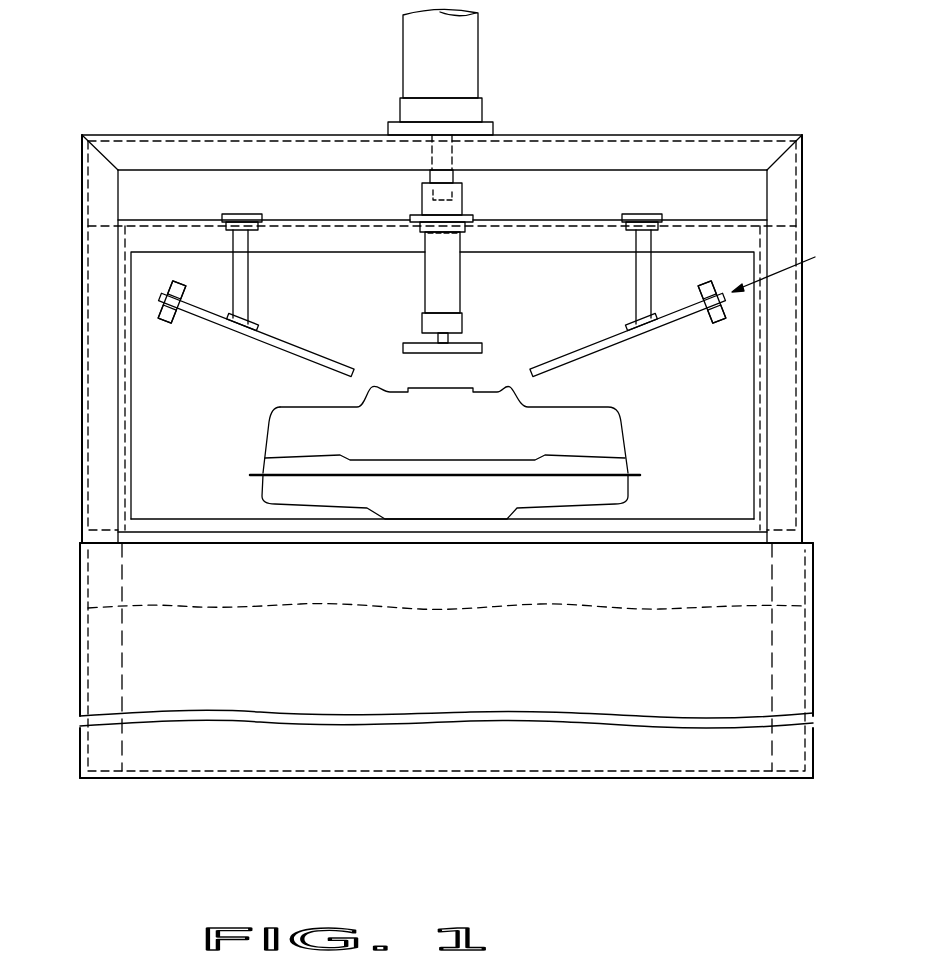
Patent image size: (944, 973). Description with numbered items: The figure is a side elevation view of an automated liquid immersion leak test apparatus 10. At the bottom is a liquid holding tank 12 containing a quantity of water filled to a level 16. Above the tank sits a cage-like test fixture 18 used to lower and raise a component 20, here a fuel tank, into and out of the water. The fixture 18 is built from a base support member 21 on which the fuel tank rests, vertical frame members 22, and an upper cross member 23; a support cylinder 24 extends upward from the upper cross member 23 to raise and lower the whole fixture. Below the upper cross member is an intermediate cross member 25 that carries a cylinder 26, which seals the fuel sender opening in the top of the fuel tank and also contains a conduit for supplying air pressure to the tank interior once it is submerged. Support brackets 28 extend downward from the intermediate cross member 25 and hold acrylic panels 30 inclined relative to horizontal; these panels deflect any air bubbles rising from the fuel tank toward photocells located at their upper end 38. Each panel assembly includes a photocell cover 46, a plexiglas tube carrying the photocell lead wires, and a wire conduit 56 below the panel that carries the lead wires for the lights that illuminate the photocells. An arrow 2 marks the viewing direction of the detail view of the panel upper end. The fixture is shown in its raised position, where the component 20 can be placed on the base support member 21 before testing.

The automated liquid immersion leak test apparatus 10 is at (436, 393).
The liquid holding tank 12 is at (80, 660).
The water level 16 is at (482, 604).
The test fixture 18 is at (70, 402).
The component 20 is at (281, 425).
The base support member 21 is at (689, 517).
The vertical frame members 22 is at (97, 267).
The upper cross member 23 is at (251, 134).
The support cylinder 24 is at (472, 52).
The intermediate cross member 25 is at (530, 236).
The cylinder 26 is at (458, 278).
The support brackets 28 is at (248, 291).
The acrylic panels 30 is at (265, 341).
The upper end 38 is at (163, 292).
The photocell cover 46 is at (196, 278).
The wire conduit 56 is at (167, 320).
The arrow 2 is at (783, 266).